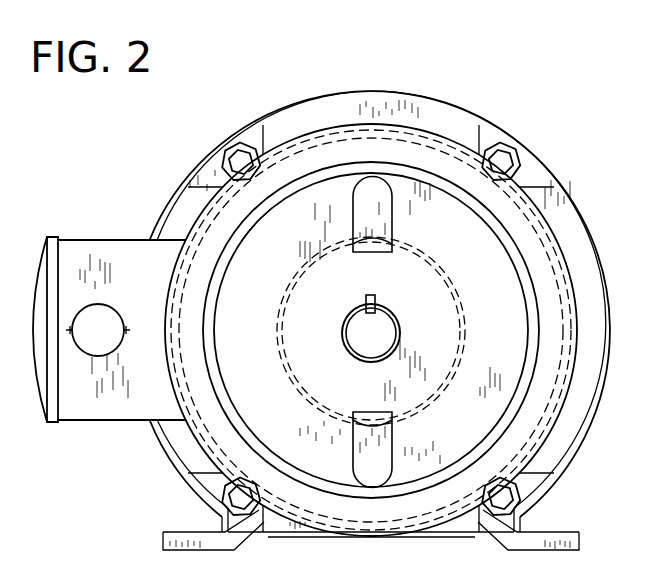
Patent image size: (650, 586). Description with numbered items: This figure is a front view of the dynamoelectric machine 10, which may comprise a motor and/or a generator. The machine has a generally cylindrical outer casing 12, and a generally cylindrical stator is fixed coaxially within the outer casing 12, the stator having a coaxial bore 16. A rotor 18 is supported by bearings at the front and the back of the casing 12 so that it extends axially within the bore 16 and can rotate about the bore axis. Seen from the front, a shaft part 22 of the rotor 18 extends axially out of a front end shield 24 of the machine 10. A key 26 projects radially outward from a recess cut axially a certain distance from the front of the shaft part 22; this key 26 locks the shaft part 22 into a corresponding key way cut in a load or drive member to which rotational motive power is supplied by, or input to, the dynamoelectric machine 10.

The dynamoelectric machine 10 is at (242, 114).
The outer casing 12 is at (427, 139).
The coaxial bore 16 is at (446, 280).
The rotor 18 is at (461, 345).
The shaft part 22 is at (352, 320).
The front end shield 24 is at (326, 157).
The key 26 is at (371, 294).